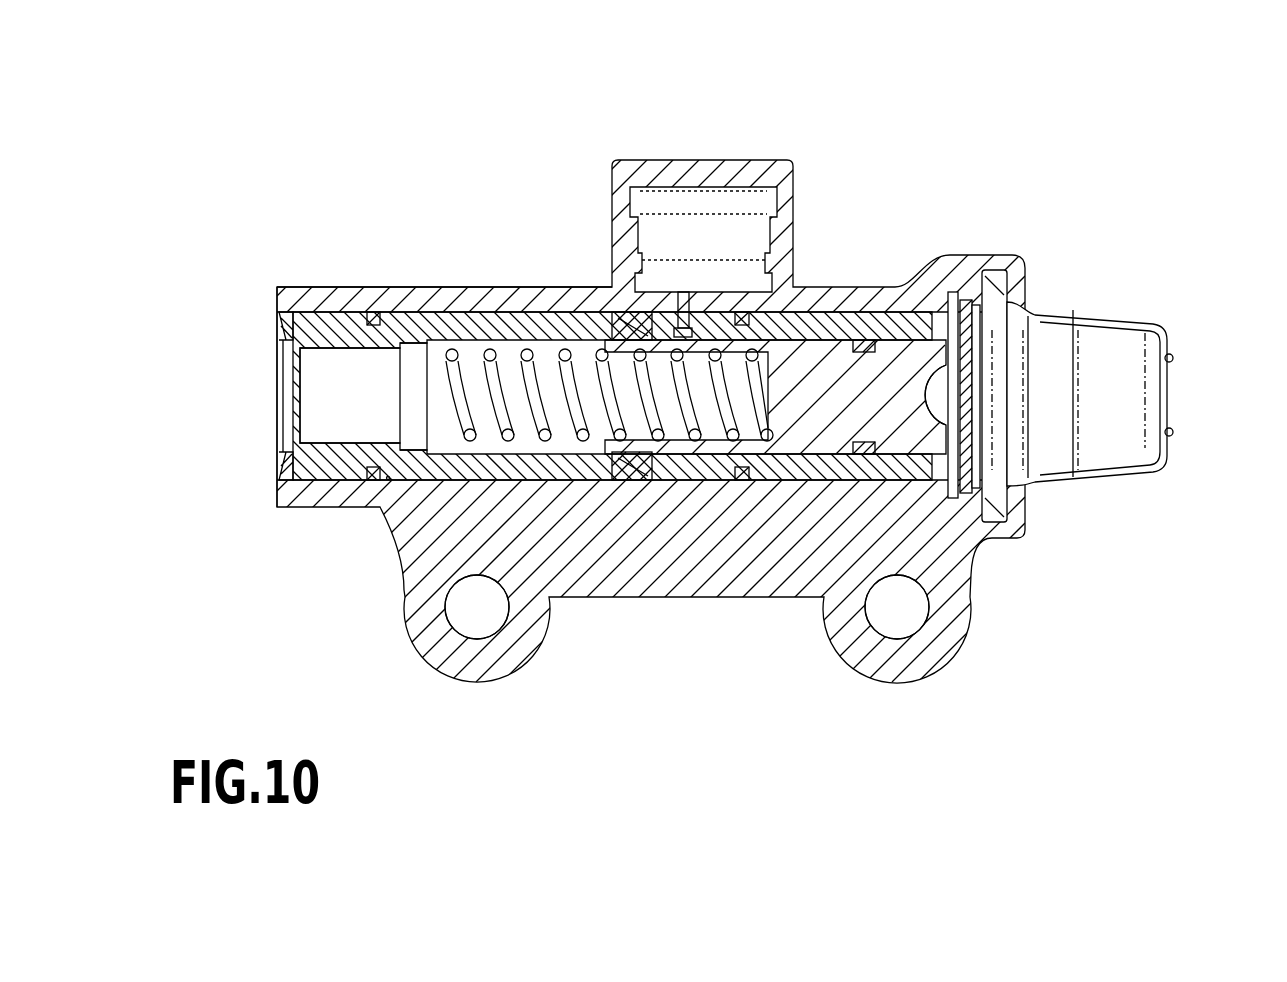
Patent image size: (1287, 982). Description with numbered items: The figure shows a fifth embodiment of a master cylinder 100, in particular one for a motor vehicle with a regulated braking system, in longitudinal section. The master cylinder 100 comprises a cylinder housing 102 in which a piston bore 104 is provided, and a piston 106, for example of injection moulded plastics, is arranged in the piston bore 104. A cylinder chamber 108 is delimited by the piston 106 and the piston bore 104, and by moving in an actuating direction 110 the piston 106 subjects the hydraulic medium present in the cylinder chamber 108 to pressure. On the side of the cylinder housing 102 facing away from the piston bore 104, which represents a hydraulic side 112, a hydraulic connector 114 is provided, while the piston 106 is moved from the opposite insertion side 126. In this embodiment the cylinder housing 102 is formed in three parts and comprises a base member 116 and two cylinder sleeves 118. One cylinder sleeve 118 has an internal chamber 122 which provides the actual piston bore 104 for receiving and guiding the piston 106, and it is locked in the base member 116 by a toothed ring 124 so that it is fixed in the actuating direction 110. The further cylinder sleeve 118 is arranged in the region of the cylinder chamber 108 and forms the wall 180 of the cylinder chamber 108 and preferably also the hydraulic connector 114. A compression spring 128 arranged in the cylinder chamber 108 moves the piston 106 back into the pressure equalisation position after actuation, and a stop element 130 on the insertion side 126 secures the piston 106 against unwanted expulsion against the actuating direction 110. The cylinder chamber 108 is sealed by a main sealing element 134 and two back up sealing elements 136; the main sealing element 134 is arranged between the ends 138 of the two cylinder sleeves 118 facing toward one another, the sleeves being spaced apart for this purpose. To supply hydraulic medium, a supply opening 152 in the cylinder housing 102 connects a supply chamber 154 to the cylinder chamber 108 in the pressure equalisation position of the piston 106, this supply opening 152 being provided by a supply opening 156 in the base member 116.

The master cylinder 100 is at (722, 407).
The cylinder housing 102 is at (405, 302).
The piston bore 104 is at (838, 322).
The piston 106 is at (915, 362).
The cylinder chamber 108 is at (458, 438).
The actuating direction 110 is at (985, 752).
The hydraulic side 112 is at (280, 300).
The hydraulic connector 114 is at (312, 422).
The base member 116 is at (330, 300).
The cylinder sleeve 118 is at (345, 478).
The internal chamber 122 is at (932, 432).
The toothed ring 124 is at (953, 318).
The insertion side 126 is at (1043, 523).
The compression spring 128 is at (450, 356).
The stop element 130 is at (1010, 460).
The main sealing element 134 is at (612, 325).
The back up sealing elements 136 is at (748, 316).
The ends of the cylinder sleeves 138 is at (639, 470).
The supply opening 152 is at (683, 300).
The supply chamber 154 is at (660, 242).
The supply opening in the base member 156 is at (689, 335).
The wall of the cylinder chamber 180 is at (388, 478).